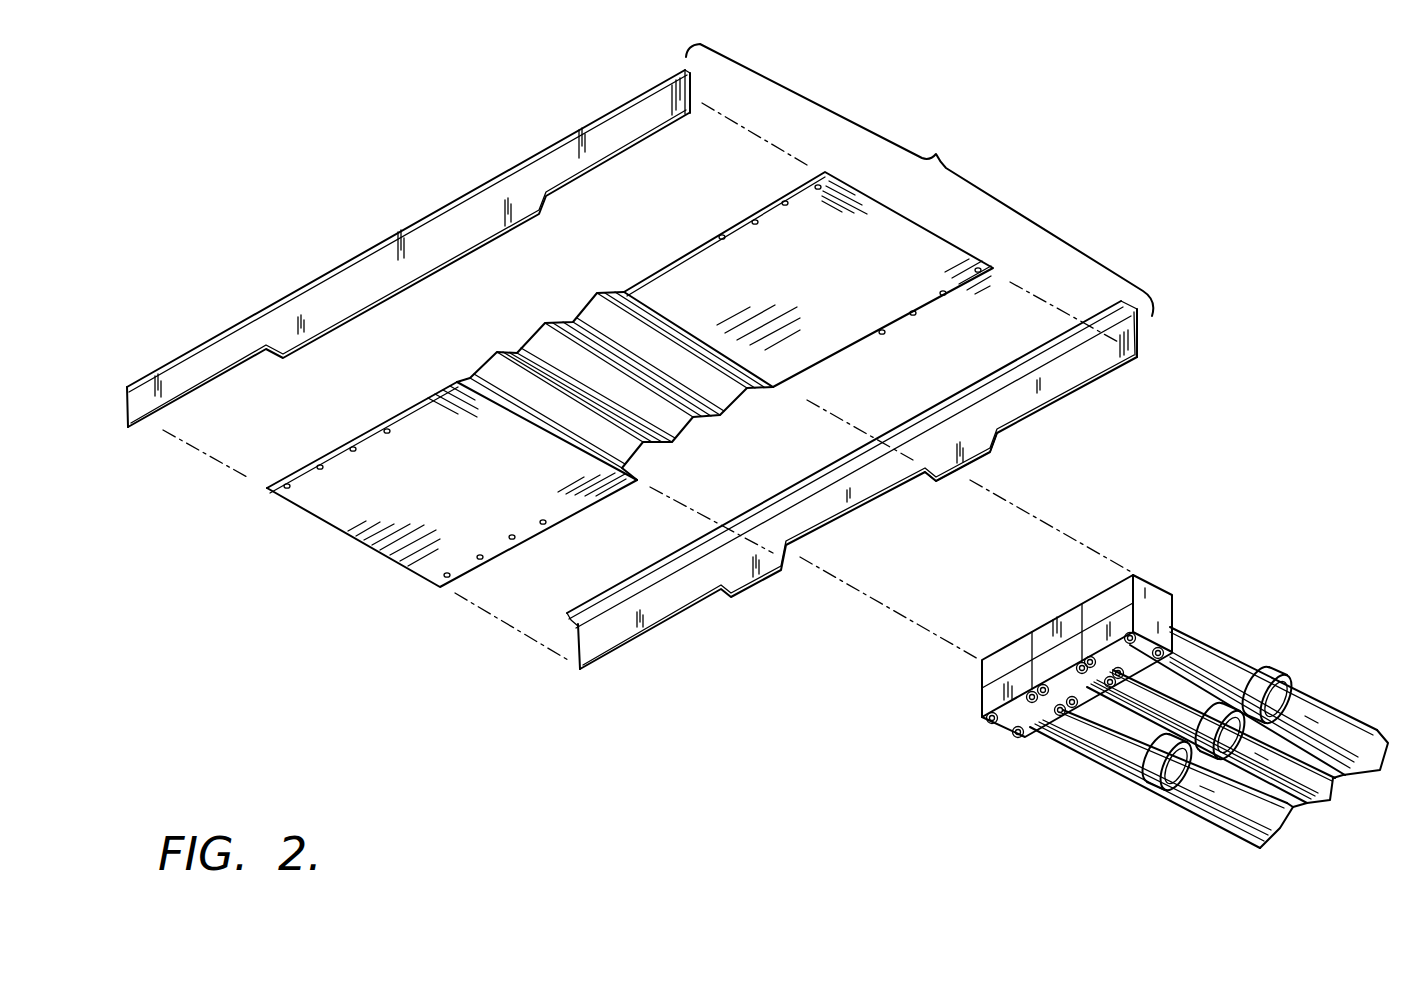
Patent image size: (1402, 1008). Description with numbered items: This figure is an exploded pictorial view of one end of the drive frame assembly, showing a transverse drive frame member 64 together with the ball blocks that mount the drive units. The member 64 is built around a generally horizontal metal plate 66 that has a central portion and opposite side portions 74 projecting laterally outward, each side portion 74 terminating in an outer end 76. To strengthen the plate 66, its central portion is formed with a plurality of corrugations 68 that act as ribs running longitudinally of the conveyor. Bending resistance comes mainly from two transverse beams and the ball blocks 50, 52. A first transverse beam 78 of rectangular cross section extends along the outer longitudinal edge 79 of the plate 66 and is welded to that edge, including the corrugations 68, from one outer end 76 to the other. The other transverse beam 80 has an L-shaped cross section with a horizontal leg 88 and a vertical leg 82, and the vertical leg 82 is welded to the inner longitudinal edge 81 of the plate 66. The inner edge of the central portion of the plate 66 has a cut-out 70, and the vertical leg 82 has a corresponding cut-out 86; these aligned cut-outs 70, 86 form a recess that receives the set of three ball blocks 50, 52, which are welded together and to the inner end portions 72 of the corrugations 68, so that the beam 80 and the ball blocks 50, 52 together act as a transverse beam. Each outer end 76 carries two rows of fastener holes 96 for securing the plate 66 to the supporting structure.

The ball block 50 is at (1185, 693).
The ball block 52 is at (1040, 720).
The transverse drive frame member 64 is at (640, 398).
The metal plate 66 is at (631, 433).
The corrugations 68 is at (623, 383).
The cut-out 70 is at (780, 390).
The inner end portions 72 is at (692, 428).
The side portions 74 is at (478, 492).
The outer ends 76 is at (323, 508).
The first transverse beam 78 is at (417, 186).
The outer longitudinal edge 79 is at (347, 440).
The transverse beam 80 is at (829, 527).
The inner longitudinal edge 81 is at (846, 350).
The vertical leg 82 is at (590, 650).
The cut-out 86 is at (935, 480).
The horizontal leg 88 is at (577, 628).
The fastener hole 96 is at (290, 487).